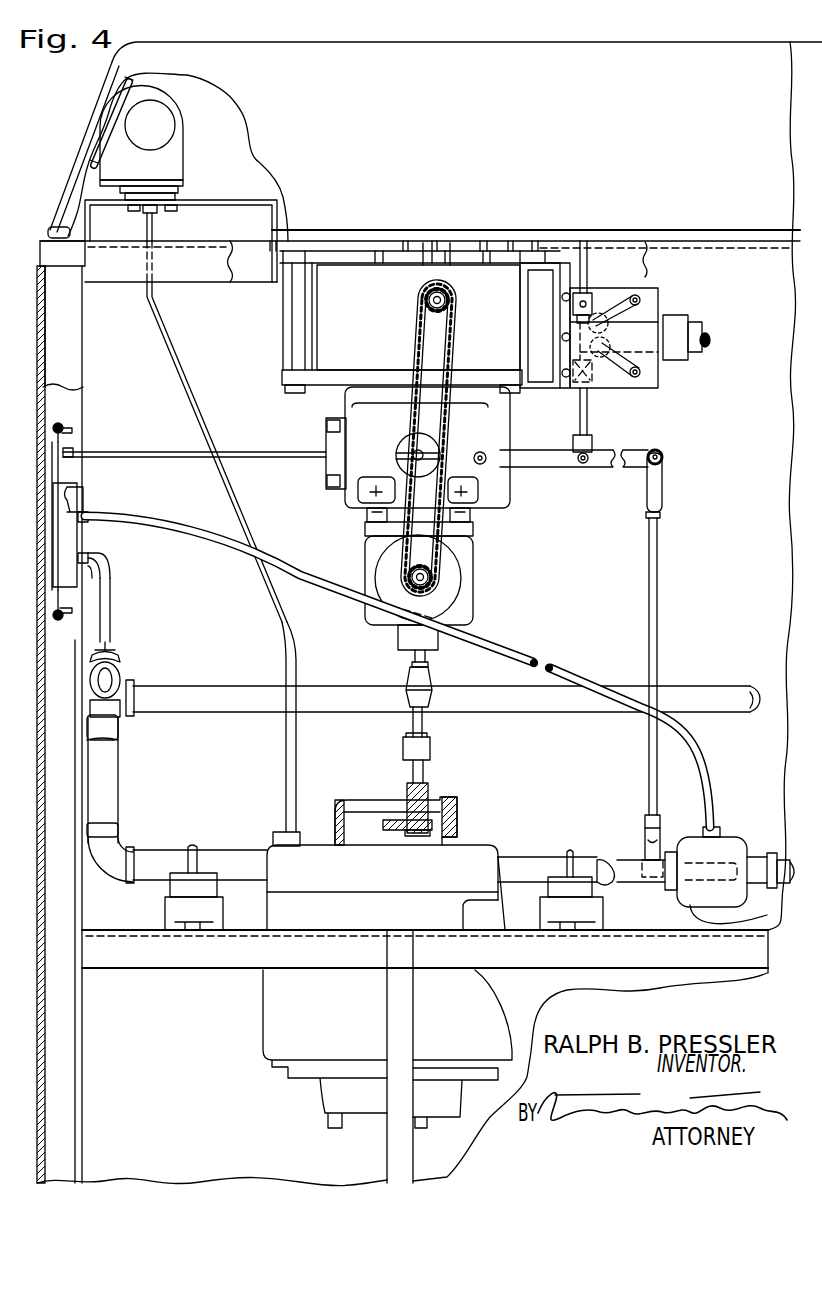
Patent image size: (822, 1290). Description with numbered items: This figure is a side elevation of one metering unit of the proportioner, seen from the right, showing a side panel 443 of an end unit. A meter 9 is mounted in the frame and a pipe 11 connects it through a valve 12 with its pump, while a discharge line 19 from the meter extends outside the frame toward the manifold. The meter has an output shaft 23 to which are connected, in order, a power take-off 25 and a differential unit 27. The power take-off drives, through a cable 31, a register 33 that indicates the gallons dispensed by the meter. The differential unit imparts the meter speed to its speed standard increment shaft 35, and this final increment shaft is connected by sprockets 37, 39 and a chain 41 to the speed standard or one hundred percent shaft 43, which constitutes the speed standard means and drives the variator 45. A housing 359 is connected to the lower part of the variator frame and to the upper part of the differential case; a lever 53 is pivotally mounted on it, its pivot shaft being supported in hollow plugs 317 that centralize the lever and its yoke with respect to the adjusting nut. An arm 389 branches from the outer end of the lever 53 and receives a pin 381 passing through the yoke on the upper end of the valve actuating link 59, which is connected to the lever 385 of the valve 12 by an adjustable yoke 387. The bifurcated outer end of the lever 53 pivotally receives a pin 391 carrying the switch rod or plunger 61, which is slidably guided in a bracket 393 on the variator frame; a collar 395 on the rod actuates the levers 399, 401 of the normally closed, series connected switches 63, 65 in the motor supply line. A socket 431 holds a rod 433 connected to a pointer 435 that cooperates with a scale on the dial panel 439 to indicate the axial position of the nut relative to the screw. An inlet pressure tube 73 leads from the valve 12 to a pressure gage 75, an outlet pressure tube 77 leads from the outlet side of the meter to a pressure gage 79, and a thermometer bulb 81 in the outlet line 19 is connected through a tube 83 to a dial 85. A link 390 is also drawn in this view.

The meter 9 is at (473, 857).
The pipe 11 is at (527, 867).
The valve 12 is at (720, 850).
The discharge line 19 is at (233, 670).
The output shaft 23 is at (423, 773).
The power take-off 25 is at (427, 747).
The differential unit 27 is at (465, 617).
The cable 31 is at (177, 353).
The register 33 is at (178, 165).
The speed standard increment shaft 35 is at (427, 575).
The sprocket 37 is at (403, 575).
The sprocket 39 is at (450, 307).
The chain 41 is at (438, 552).
The speed standard shaft 43 is at (443, 298).
The variator 45 is at (343, 365).
The lever 53 is at (520, 460).
The link 59 is at (658, 542).
The plunger 61 is at (582, 420).
The switch 63 is at (660, 383).
The switch 65 is at (653, 303).
The inlet pressure tube 73 is at (313, 578).
The pressure gage 75 is at (80, 495).
The outlet pressure tube 77 is at (290, 760).
The pressure gage 79 is at (70, 537).
The thermometer bulb 81 is at (112, 666).
The tube 83 is at (110, 608).
The dial 85 is at (72, 573).
The hollow plug 317 is at (598, 296).
The housing 359 is at (350, 510).
The pin 381 is at (663, 453).
The lever 385 is at (687, 860).
The adjustable yoke 387 is at (645, 832).
The arm 389 is at (640, 470).
The link 390 is at (663, 485).
The pin 391 is at (587, 473).
The bracket 393 is at (590, 293).
The collar 395 is at (578, 395).
The lever 399 is at (600, 357).
The lever 401 is at (606, 320).
The socket 431 is at (328, 448).
The rod 433 is at (158, 430).
The pointer 435 is at (63, 468).
The dial panel 439 is at (63, 442).
The side panel 443 is at (760, 352).